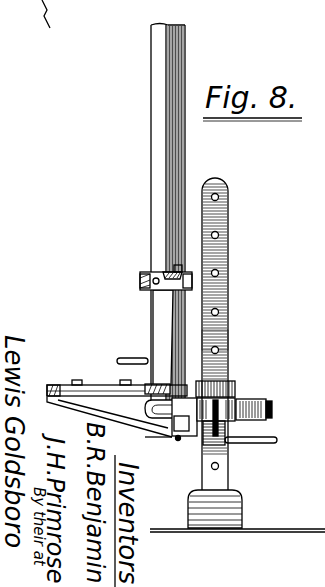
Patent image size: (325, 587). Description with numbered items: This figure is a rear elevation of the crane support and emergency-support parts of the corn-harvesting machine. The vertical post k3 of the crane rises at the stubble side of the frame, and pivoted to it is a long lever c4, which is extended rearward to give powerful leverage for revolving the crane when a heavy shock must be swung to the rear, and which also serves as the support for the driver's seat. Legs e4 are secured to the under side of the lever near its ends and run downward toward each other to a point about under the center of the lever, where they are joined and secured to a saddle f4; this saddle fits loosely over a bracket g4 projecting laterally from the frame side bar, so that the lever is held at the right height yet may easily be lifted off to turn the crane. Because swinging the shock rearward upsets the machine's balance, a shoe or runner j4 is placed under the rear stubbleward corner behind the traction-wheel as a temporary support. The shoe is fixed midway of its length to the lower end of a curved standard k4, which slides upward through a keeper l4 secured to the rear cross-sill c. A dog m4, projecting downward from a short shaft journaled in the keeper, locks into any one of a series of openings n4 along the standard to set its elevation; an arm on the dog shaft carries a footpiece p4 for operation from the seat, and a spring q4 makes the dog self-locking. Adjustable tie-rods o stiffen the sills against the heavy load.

The vertical post k3 is at (185, 152).
The long lever c4 is at (153, 273).
The legs e4 is at (157, 318).
The footpiece p4 is at (135, 352).
The bracket g4 is at (118, 401).
The saddle f4 is at (162, 436).
The spring q4 is at (238, 363).
The keeper l4 is at (236, 396).
The rear cross-sill c is at (272, 408).
The dog m4 is at (232, 420).
The adjustable tie-rods o is at (258, 443).
The series of openings n4 is at (228, 345).
The curved standard k4 is at (228, 298).
The shoe or runner j4 is at (242, 506).